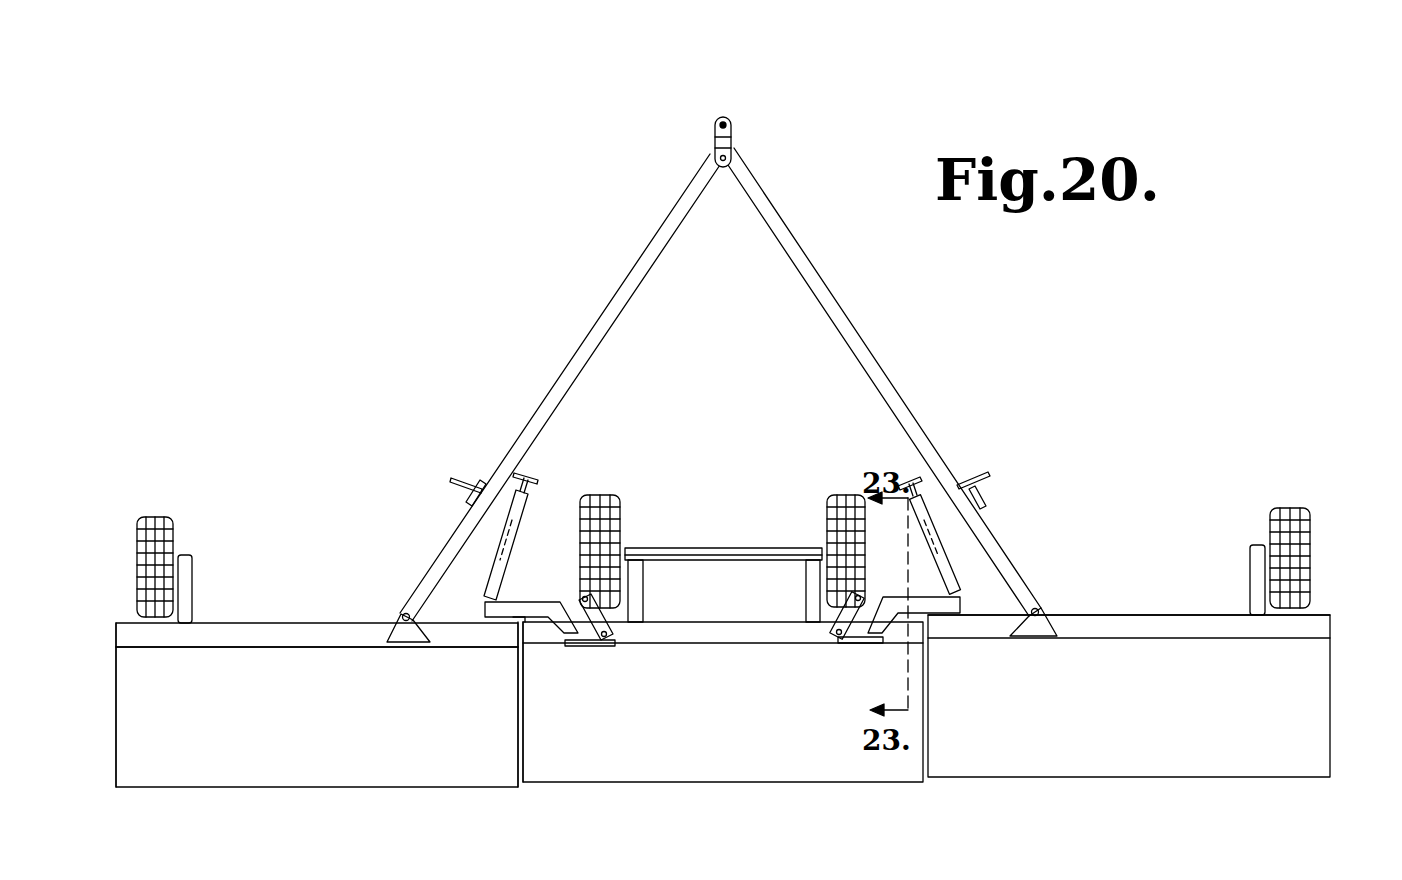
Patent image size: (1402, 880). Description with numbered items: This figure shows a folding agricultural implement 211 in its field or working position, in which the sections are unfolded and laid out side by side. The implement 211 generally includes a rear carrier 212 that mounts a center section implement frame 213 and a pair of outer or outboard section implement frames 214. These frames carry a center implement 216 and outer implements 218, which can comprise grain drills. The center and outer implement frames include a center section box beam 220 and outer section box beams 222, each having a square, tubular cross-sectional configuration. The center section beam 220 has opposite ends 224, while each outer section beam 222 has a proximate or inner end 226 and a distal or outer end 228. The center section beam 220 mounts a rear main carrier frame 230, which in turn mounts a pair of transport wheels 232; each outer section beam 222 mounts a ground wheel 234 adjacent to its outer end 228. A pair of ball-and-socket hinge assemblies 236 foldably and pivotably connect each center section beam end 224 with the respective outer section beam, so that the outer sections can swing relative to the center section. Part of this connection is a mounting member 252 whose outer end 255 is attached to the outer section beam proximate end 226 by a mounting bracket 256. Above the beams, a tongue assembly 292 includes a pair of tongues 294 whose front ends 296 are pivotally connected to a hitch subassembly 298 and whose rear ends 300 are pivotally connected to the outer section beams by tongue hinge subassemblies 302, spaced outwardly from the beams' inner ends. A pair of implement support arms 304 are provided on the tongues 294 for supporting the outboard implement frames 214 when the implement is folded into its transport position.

The folding agricultural implement 211 is at (458, 192).
The rear carrier 212 is at (634, 548).
The center section implement frame 213 is at (620, 645).
The outer section implement frame 214 is at (1330, 615).
The center implement 216 is at (923, 782).
The outer implement 218 is at (1366, 786).
The center section box beam 220 is at (636, 645).
The outer section box beam 222 is at (212, 647).
The center section beam end 224 is at (513, 632).
The outer section beam proximate end 226 is at (523, 650).
The outer section beam distal end 228 is at (116, 632).
The rear main carrier frame 230 is at (716, 548).
The transport wheel 232 is at (606, 496).
The ground wheel 234 is at (1298, 508).
The ball-and-socket hinge assembly 236 is at (839, 652).
The mounting member 252 is at (528, 600).
The mounting member outer end 255 is at (980, 603).
The mounting bracket 256 is at (940, 650).
The tongue assembly 292 is at (715, 147).
The tongue 294 is at (770, 212).
The tongue front end 296 is at (734, 148).
The hitch subassembly 298 is at (723, 118).
The tongue rear end 300 is at (1025, 592).
The tongue hinge subassembly 302 is at (1045, 640).
The implement support arm 304 is at (988, 478).